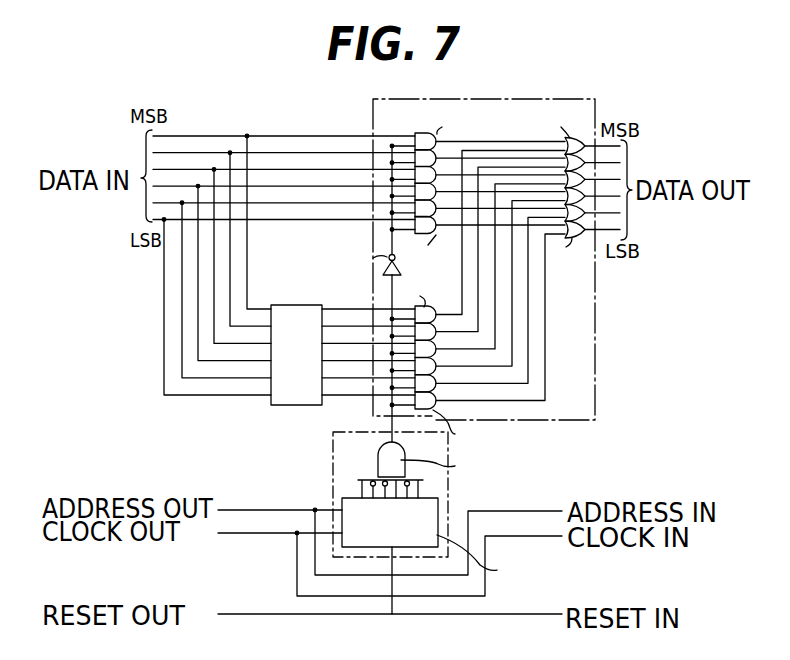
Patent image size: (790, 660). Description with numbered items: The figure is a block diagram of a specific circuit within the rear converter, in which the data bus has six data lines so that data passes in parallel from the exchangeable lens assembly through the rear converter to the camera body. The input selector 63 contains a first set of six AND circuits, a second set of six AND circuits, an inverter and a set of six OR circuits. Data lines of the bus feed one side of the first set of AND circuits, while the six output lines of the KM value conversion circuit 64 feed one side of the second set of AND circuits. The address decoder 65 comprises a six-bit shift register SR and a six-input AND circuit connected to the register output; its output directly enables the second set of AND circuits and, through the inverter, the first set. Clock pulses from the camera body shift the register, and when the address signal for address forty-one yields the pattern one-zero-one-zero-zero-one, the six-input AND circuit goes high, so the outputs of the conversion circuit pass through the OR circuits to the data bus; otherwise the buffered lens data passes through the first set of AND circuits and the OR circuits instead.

The input selector 63 is at (548, 99).
The KM value conversion circuit 64 is at (296, 306).
The address decoder 65 is at (333, 485).